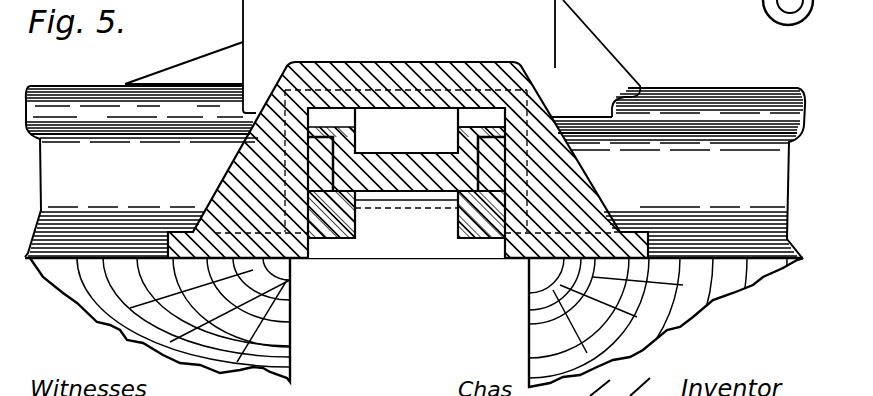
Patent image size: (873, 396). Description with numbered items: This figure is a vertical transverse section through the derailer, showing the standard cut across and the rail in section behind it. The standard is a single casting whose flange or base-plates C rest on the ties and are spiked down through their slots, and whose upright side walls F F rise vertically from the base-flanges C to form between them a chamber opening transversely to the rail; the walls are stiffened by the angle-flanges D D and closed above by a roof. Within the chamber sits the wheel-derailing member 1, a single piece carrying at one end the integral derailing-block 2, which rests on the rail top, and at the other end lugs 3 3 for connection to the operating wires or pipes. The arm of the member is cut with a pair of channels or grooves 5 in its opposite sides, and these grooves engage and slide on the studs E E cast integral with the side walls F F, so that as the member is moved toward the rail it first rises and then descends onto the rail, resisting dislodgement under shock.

The wheel-derailing member 1 is at (400, 125).
The derailing-block 2 is at (382, 58).
The lugs 3 is at (765, 15).
The channels or grooves 5 is at (380, 133).
The flange or base-plates C is at (645, 236).
The angle-flanges D is at (603, 202).
The studs E is at (480, 280).
The side walls F is at (608, 172).